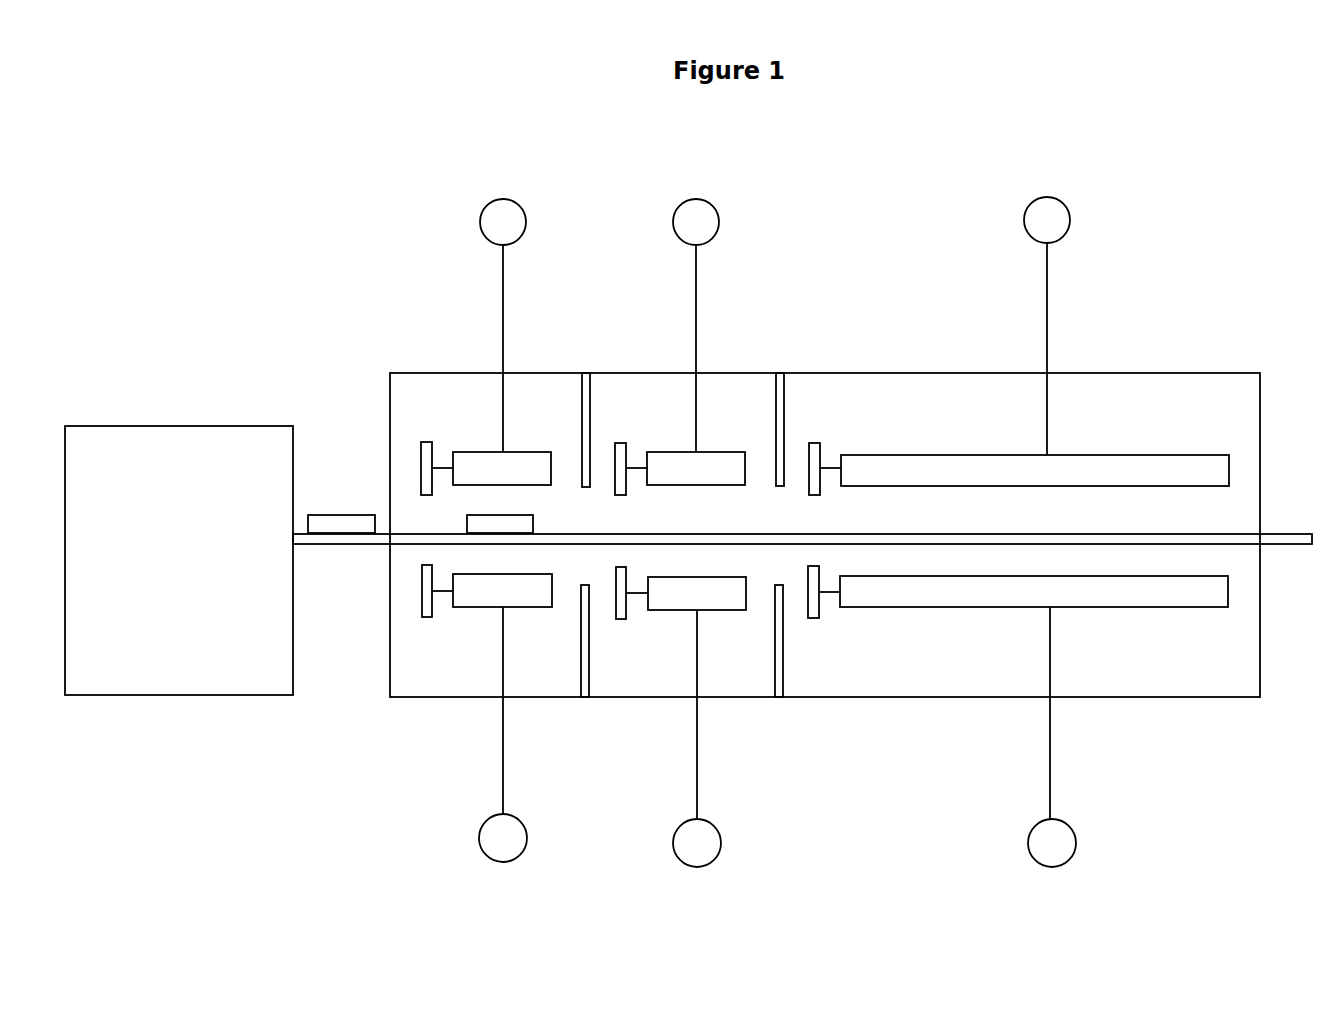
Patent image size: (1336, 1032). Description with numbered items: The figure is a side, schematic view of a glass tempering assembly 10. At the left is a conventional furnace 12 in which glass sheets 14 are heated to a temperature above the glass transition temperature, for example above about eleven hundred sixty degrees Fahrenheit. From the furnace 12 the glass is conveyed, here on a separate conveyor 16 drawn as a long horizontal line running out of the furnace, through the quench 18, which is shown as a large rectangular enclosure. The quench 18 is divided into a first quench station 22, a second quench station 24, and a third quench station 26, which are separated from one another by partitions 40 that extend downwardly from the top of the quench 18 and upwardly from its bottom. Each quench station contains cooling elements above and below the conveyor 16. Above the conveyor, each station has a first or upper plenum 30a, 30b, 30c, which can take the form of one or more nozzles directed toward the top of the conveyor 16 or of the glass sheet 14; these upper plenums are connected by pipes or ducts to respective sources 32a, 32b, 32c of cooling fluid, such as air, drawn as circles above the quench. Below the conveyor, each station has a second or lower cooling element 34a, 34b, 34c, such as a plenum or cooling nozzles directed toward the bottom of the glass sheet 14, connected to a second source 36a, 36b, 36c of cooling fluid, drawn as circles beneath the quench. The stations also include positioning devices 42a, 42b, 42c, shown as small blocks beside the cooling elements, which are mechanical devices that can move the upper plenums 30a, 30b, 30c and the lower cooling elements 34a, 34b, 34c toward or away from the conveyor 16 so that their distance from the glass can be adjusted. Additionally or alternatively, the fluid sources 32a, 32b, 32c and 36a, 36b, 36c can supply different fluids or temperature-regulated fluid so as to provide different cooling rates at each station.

The assembly 10 is at (878, 195).
The furnace 12 is at (179, 560).
The glass sheet 14 is at (345, 503).
The conveyor 16 is at (1292, 527).
The quench 18 is at (1264, 371).
The first quench station 22 is at (524, 391).
The second quench station 24 is at (713, 391).
The third quench station 26 is at (1074, 391).
The first or upper plenum 30a is at (532, 449).
The first or upper plenum 30b is at (716, 448).
The first or upper plenum 30c is at (1112, 449).
The source of cooling fluid 32a is at (477, 218).
The source of cooling fluid 32b is at (670, 218).
The source of cooling fluid 32c is at (1021, 218).
The second or lower cooling element 34a is at (480, 609).
The second or lower cooling element 34b is at (685, 612).
The second or lower cooling element 34c is at (1028, 609).
The second source of cooling fluid 36a is at (477, 838).
The second source of cooling fluid 36b is at (671, 842).
The second source of cooling fluid 36c is at (1026, 841).
The partition 40 is at (592, 423).
The positioning device 42a is at (417, 438).
The positioning device 42b is at (631, 562).
The positioning device 42c is at (828, 562).